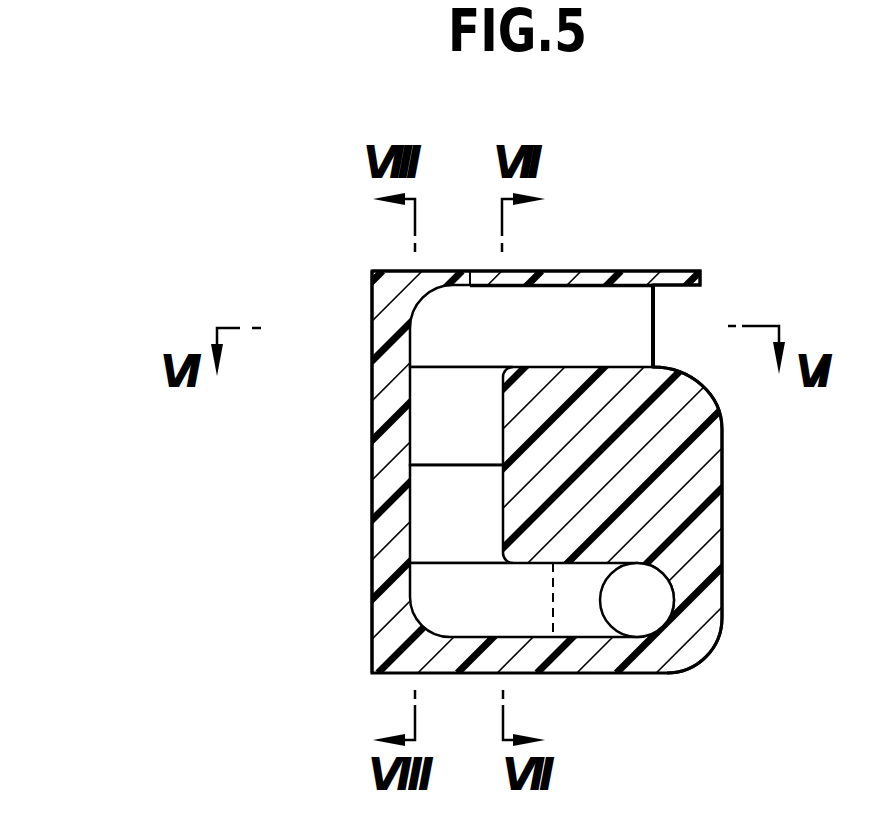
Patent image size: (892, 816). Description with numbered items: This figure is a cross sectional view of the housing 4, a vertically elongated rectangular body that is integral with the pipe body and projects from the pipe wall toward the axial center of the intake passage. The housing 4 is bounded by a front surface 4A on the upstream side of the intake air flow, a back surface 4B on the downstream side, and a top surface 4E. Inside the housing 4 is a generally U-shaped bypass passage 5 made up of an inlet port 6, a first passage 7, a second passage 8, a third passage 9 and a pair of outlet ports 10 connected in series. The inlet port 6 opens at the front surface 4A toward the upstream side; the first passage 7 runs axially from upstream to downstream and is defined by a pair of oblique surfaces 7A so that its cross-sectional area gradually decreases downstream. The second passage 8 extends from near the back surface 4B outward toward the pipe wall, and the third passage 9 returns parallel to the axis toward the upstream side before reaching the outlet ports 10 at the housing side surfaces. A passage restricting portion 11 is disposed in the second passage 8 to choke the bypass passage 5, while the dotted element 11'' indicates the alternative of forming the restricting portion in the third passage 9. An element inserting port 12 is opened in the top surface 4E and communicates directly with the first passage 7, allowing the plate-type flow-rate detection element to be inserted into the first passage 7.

The housing 4 is at (707, 434).
The front surface 4A is at (723, 503).
The back surface 4B is at (380, 568).
The top surface 4E is at (635, 270).
The bypass passage 5 is at (448, 418).
The inlet port 6 is at (635, 349).
The first passage 7 is at (450, 322).
The oblique surface 7A is at (585, 303).
The second passage 8 is at (440, 515).
The third passage 9 is at (582, 612).
The outlet port 10 is at (648, 612).
The passage restricting portion 11 is at (404, 434).
The passage restricting portion 11'' is at (553, 639).
The element inserting port 12 is at (450, 177).